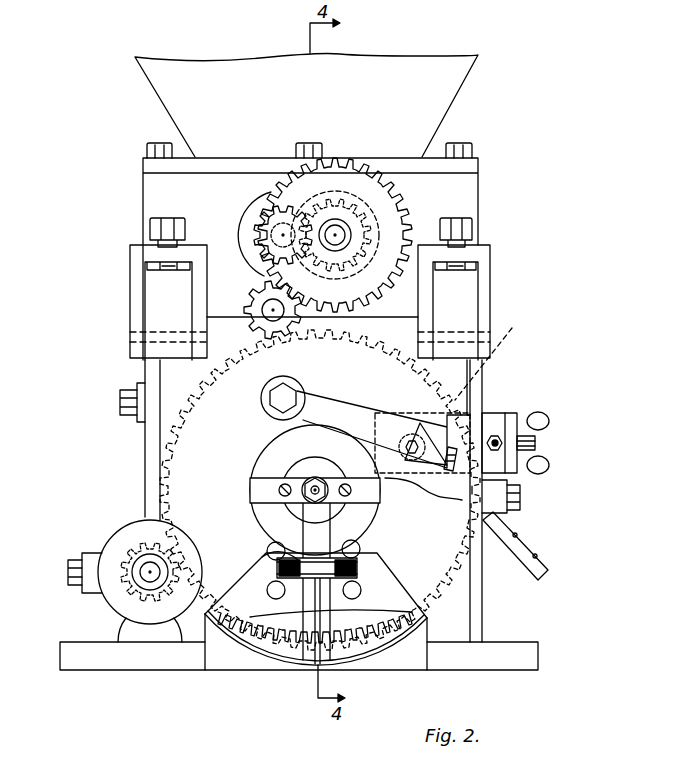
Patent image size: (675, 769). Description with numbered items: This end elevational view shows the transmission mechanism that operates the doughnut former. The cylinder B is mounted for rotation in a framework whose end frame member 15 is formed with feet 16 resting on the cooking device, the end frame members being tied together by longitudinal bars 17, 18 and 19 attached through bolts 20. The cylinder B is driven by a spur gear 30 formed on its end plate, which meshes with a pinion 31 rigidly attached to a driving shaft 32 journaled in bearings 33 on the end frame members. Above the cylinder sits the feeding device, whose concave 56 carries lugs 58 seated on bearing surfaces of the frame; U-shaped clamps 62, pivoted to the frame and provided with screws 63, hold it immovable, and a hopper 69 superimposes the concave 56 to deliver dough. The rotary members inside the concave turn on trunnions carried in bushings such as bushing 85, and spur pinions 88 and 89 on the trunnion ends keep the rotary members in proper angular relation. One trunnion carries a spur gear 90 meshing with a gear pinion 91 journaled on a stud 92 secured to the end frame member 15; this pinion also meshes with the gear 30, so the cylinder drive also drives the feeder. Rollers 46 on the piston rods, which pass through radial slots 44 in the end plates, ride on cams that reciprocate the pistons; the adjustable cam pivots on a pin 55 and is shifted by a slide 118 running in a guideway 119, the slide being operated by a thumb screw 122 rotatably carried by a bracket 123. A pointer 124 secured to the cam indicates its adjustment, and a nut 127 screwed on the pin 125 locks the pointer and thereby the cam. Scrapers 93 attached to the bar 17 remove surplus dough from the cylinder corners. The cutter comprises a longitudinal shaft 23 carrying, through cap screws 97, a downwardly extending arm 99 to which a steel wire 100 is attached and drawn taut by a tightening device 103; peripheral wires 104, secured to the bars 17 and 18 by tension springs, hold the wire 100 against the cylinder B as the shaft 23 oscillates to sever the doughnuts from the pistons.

The hopper 69 is at (463, 65).
The concave 56 is at (478, 190).
The bushing 85 is at (258, 195).
The spur pinion 88 is at (355, 172).
The spur pinion 89 is at (262, 225).
The spur gear 90 is at (395, 212).
The gear pinion 91 is at (258, 290).
The stud 92 is at (272, 310).
The screw 63 is at (150, 232).
The U-shaped clamp 62 is at (130, 270).
The lug 58 is at (170, 295).
The end frame member 15 is at (145, 440).
The longitudinal bar 18 is at (137, 385).
The bolt 20 is at (120, 402).
The longitudinal bar 17 is at (507, 495).
The guideway 119 is at (503, 357).
The slide 118 is at (498, 413).
The bracket 123 is at (510, 413).
The thumb screw 122 is at (545, 430).
The scraper 93 is at (548, 572).
The pin 55 is at (270, 398).
The pointer 124 is at (335, 405).
The pin 125 is at (410, 458).
The nut 127 is at (392, 480).
The cap screw 97 is at (310, 480).
The arm 99 is at (312, 523).
The longitudinal shaft 23 is at (298, 488).
The peripheral wire 104 is at (302, 662).
The spur gear 30 is at (250, 618).
The steel wire 100 is at (405, 612).
The cylinder B is at (370, 636).
The roller 46 is at (270, 594).
The radial slot 44 is at (362, 580).
The tightening device 103 is at (272, 552).
The pinion 31 is at (118, 530).
The bearing 33 is at (112, 548).
The driving shaft 32 is at (140, 580).
The longitudinal bar 19 is at (82, 590).
The foot 16 is at (82, 655).